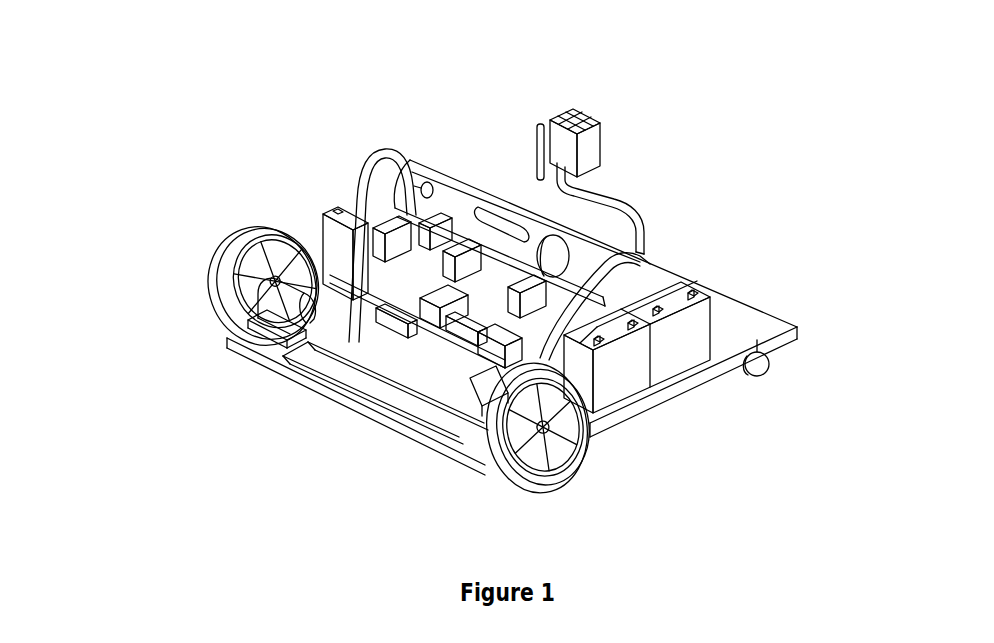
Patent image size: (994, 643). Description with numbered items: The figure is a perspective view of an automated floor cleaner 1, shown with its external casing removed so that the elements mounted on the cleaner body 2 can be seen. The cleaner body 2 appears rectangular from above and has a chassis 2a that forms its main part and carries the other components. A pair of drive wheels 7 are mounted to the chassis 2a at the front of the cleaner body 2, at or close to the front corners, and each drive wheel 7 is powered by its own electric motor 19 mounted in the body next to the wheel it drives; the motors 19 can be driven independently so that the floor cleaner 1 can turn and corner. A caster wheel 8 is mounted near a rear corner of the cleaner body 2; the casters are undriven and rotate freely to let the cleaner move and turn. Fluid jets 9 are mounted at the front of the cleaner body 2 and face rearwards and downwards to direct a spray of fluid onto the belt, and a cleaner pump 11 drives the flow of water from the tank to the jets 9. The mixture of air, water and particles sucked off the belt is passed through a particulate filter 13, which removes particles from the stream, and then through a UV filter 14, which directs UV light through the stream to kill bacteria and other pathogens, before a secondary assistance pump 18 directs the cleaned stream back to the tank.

The automated floor cleaner 1 is at (152, 96).
The cleaner body 2 is at (770, 144).
The chassis 2a is at (755, 328).
The drive wheels 7 is at (210, 252).
The caster wheels 8 is at (763, 365).
The fluid jets 9 is at (437, 297).
The cleaner pump 11 is at (367, 242).
The particulate filter 13 is at (470, 318).
The UV filter 14 is at (452, 200).
The secondary assistance pump 18 is at (603, 118).
The electric motor 19 is at (283, 297).